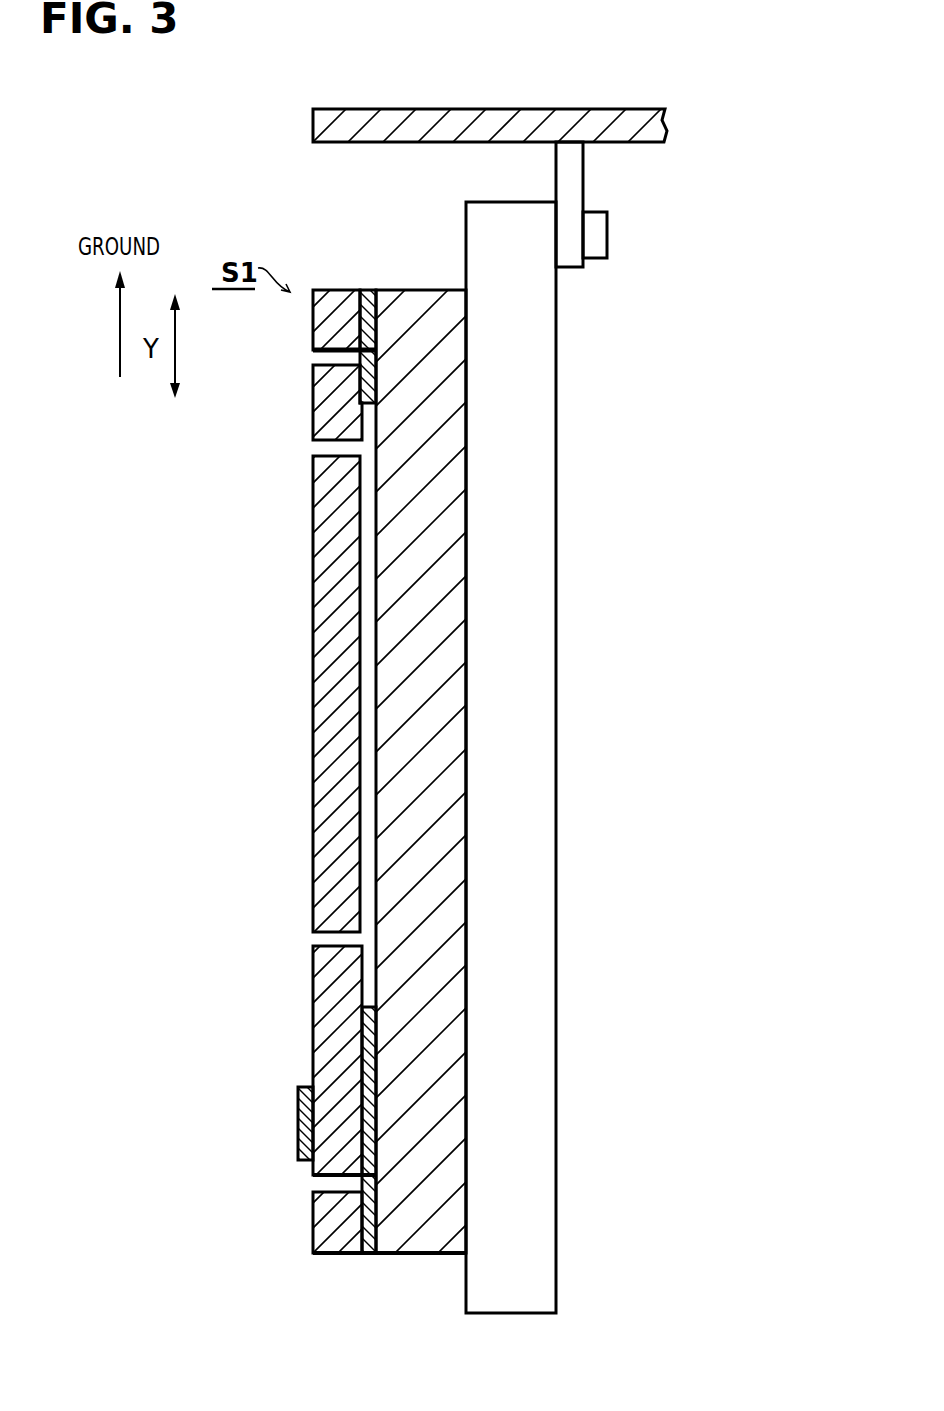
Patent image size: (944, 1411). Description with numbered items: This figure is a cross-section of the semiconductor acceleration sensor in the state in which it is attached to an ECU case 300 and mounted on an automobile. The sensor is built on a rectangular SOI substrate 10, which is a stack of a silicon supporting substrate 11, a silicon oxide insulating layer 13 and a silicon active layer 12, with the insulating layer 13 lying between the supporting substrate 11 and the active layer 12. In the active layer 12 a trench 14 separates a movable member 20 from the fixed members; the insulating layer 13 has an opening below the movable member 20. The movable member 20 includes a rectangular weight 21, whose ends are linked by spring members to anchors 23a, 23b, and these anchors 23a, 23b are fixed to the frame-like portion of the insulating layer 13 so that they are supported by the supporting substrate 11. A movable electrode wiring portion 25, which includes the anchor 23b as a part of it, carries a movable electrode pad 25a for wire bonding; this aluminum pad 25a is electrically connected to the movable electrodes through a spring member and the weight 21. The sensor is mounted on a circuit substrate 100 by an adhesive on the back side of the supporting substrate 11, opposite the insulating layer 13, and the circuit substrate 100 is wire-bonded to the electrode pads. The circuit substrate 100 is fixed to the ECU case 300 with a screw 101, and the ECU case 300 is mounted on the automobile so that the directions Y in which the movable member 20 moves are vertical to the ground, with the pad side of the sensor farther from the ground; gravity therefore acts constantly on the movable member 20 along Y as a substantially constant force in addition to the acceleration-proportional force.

The SOI substrate 10 is at (472, 709).
The silicon supporting substrate 11 is at (415, 310).
The silicon active layer 12 is at (333, 308).
The silicon oxide insulating layer 13 is at (365, 317).
The trench 14 is at (323, 355).
The movable member 20 is at (410, 770).
The weight 21 is at (313, 723).
The anchor 23a is at (313, 387).
The anchor 23b is at (313, 998).
The movable electrode wiring portion 25 is at (299, 1106).
The movable electrode pad 25a is at (298, 1123).
The circuit substrate 100 is at (556, 350).
The screw 101 is at (607, 233).
The ECU case 300 is at (618, 142).